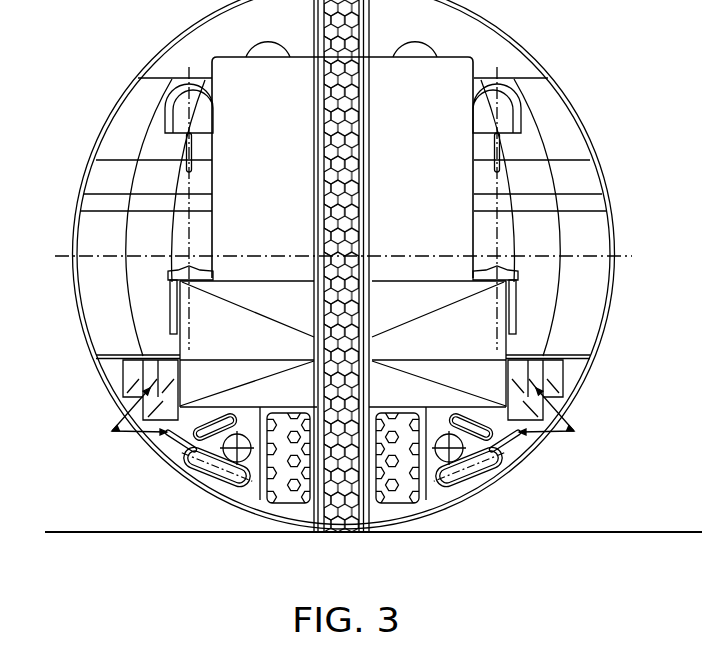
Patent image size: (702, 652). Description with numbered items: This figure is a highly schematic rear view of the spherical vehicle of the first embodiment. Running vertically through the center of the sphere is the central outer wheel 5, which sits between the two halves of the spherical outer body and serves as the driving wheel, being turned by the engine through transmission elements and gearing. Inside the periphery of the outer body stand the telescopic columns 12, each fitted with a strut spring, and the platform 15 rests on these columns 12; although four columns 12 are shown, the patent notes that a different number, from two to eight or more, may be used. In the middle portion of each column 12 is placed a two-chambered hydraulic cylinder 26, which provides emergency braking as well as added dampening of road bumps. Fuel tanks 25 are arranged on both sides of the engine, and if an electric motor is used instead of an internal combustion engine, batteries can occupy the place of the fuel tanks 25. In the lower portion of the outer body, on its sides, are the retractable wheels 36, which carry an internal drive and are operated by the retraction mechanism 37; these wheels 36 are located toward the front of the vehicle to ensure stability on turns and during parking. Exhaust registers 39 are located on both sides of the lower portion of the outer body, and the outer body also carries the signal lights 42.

The central outer wheel 5 is at (347, 183).
The telescopic column 12 is at (191, 234).
The two-chambered hydraulic cylinder 26 is at (173, 282).
The platform 15 is at (133, 357).
The fuel tank 25 is at (122, 373).
The signal lights 42 is at (112, 431).
The retraction mechanism 37 is at (193, 456).
The retractable wheel 36 is at (227, 490).
The exhaust register 39 is at (403, 482).